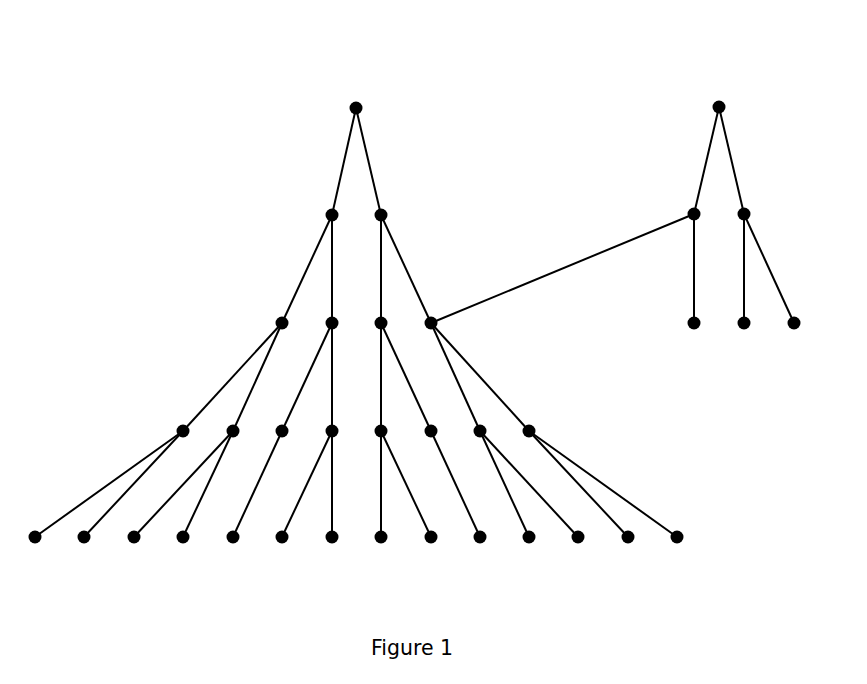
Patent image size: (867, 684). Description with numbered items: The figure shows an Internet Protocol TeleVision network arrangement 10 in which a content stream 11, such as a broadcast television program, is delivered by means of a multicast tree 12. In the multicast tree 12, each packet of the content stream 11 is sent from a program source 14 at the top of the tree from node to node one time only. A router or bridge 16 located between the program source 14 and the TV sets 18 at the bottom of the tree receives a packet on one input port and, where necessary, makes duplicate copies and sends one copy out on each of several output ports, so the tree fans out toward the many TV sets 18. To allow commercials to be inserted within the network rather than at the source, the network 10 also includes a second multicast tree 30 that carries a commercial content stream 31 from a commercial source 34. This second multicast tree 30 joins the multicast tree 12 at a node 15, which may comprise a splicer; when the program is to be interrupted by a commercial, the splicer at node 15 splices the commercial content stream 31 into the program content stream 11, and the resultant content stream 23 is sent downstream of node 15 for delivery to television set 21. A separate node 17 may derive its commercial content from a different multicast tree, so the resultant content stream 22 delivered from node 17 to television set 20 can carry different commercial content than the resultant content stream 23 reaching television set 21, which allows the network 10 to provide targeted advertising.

The IPTV network arrangement 10 is at (172, 145).
The content stream 11 is at (370, 160).
The multicast tree 12 is at (338, 162).
The program source 14 is at (356, 100).
The node 15 is at (436, 315).
The router or bridge 16 is at (280, 316).
The node 17 is at (384, 317).
The TV sets 18 is at (134, 545).
The television set 20 is at (480, 545).
The television set 21 is at (680, 545).
The resultant content stream 22 is at (419, 400).
The resultant content stream 23 is at (513, 410).
The second multicast tree 30 is at (731, 177).
The commercial content stream 31 is at (705, 160).
The commercial source 34 is at (717, 97).